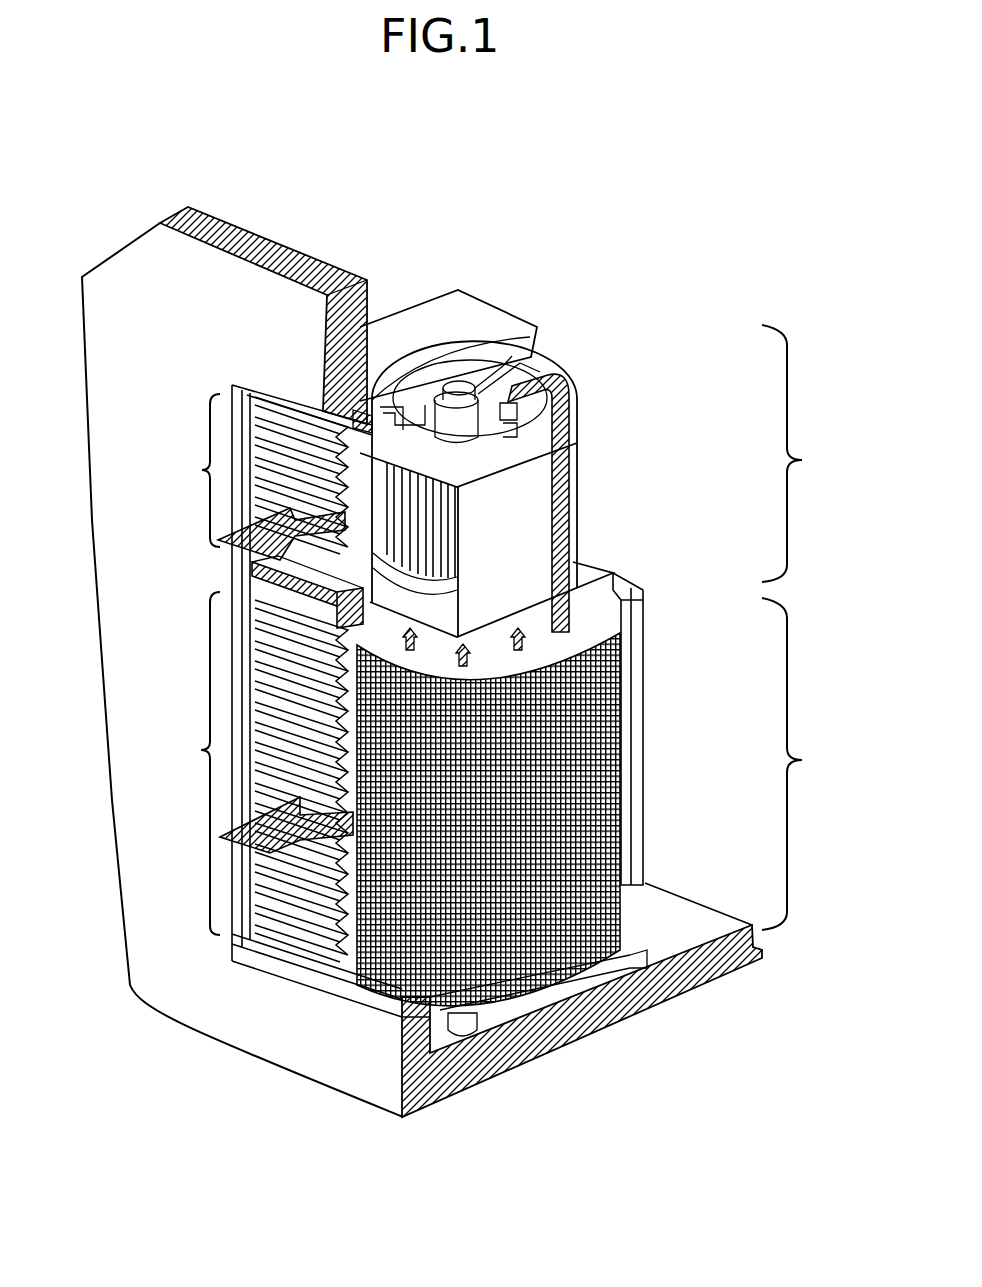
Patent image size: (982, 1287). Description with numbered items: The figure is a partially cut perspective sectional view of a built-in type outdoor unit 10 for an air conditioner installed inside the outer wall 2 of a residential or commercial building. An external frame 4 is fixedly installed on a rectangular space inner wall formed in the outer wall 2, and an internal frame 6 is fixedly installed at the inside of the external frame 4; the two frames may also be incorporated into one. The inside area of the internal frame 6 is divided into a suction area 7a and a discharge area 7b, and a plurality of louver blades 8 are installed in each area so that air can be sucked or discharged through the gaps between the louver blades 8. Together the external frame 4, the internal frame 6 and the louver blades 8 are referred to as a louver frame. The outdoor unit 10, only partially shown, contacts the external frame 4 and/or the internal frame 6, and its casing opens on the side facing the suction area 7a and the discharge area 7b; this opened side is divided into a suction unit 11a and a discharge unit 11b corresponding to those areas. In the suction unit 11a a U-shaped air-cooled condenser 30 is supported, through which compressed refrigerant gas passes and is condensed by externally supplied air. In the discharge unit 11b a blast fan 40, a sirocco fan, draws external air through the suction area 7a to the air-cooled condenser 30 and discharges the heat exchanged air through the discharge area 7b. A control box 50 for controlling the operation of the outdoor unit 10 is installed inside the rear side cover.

The outer wall 2 is at (363, 1072).
The external frame 4 is at (232, 386).
The internal frame 6 is at (248, 583).
The suction area 7a is at (252, 777).
The discharge area 7b is at (249, 477).
The louver blades 8 is at (283, 930).
The outdoor unit 10 is at (497, 302).
The suction unit 11a is at (609, 804).
The discharge unit 11b is at (611, 468).
The air-cooled condenser 30 is at (623, 777).
The blast fan 40 is at (576, 452).
The control box 50 is at (590, 575).